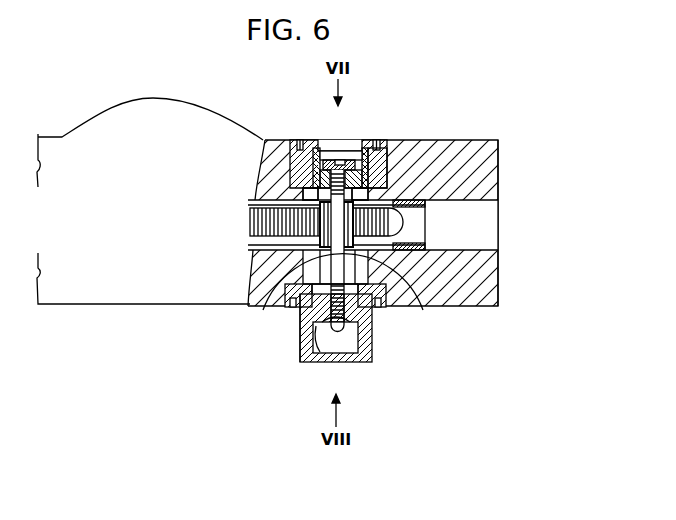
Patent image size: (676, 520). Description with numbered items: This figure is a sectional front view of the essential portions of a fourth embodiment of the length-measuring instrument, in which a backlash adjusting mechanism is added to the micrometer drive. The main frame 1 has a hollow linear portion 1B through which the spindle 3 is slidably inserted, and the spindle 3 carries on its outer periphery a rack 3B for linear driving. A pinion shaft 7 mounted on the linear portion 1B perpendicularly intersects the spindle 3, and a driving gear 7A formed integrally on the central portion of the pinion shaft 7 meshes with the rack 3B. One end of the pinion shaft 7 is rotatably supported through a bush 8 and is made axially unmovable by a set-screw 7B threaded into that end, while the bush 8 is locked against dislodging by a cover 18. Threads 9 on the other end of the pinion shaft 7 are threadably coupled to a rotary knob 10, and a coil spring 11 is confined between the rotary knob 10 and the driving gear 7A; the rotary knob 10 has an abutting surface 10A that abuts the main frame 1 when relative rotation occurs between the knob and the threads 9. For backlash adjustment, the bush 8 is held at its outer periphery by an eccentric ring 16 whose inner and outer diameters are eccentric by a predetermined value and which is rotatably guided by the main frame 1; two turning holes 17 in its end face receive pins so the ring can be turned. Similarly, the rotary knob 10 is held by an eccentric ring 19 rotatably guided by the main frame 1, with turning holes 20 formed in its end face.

The main frame 1 is at (270, 147).
The linear portion 1B is at (472, 148).
The spindle 3 is at (430, 222).
The rack 3B is at (250, 214).
The pinion shaft 7 is at (306, 266).
The driving gear 7A is at (284, 262).
The set-screw 7B is at (340, 148).
The bush 8 is at (366, 150).
The threads 9 is at (326, 330).
The rotary knob 10 is at (370, 357).
The abutting surface 10A is at (298, 315).
The coil spring 11 is at (430, 310).
The eccentric ring 16 is at (388, 153).
The turning holes 17 is at (374, 148).
The cover 18 is at (314, 143).
The eccentric ring 19 is at (386, 292).
The turning holes 20 is at (382, 302).